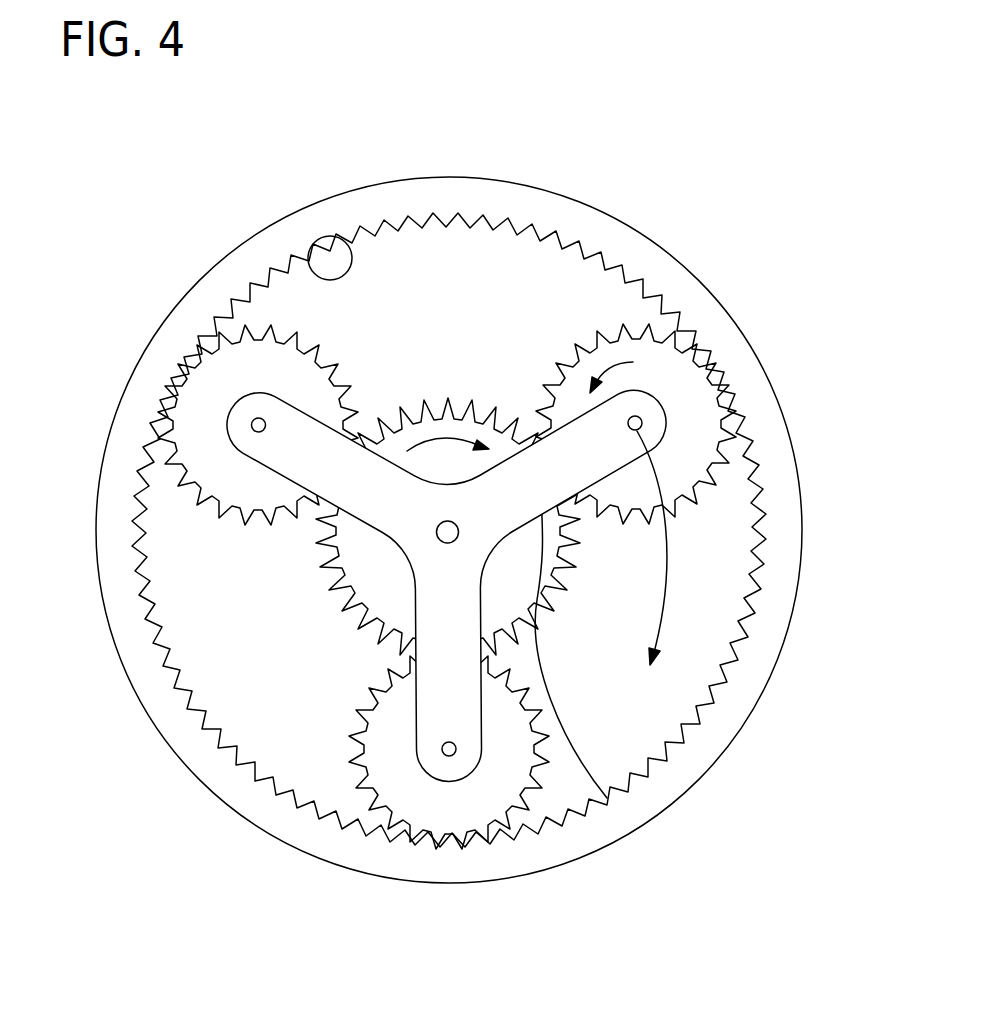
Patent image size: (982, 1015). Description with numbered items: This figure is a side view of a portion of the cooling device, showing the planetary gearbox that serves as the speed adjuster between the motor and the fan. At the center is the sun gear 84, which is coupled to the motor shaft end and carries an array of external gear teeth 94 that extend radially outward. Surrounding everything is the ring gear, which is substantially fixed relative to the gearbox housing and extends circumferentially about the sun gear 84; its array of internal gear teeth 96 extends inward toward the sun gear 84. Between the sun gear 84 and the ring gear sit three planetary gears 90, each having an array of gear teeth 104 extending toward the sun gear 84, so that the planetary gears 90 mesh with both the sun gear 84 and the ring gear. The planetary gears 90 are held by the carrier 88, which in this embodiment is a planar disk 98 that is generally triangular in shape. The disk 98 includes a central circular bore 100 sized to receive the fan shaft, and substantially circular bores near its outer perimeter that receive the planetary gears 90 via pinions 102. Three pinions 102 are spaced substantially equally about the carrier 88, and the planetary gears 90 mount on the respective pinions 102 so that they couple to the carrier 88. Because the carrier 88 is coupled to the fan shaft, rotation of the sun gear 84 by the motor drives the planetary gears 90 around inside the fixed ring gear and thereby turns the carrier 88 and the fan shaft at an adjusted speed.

The sun gear 84 is at (563, 218).
The carrier 88 is at (512, 595).
The planetary gears 90 is at (670, 384).
The external gear teeth 94 is at (472, 398).
The internal gear teeth 96 is at (303, 257).
The planar disk 98 is at (372, 515).
The central circular bore 100 is at (437, 533).
The pinions 102 is at (252, 420).
The gear teeth 104 is at (597, 337).